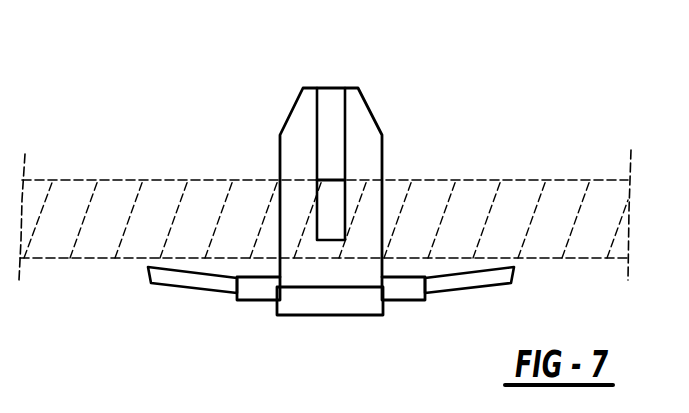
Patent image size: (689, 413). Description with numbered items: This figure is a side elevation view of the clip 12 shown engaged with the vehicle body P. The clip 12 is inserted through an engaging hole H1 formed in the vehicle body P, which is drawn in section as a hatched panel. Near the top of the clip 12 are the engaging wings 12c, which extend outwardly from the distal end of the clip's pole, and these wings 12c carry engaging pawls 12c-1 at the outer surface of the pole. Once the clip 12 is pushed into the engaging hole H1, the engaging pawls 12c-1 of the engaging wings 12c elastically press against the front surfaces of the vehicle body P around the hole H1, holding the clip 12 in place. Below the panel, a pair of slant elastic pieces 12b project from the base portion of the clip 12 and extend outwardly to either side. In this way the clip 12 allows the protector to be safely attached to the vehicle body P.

The clip 12 is at (270, 122).
The engaging wings 12c is at (328, 110).
The engaging pawls 12c-1 is at (332, 178).
The slant elastic pieces 12b is at (152, 284).
The engaging hole H1 is at (383, 178).
The vehicle body P is at (555, 258).